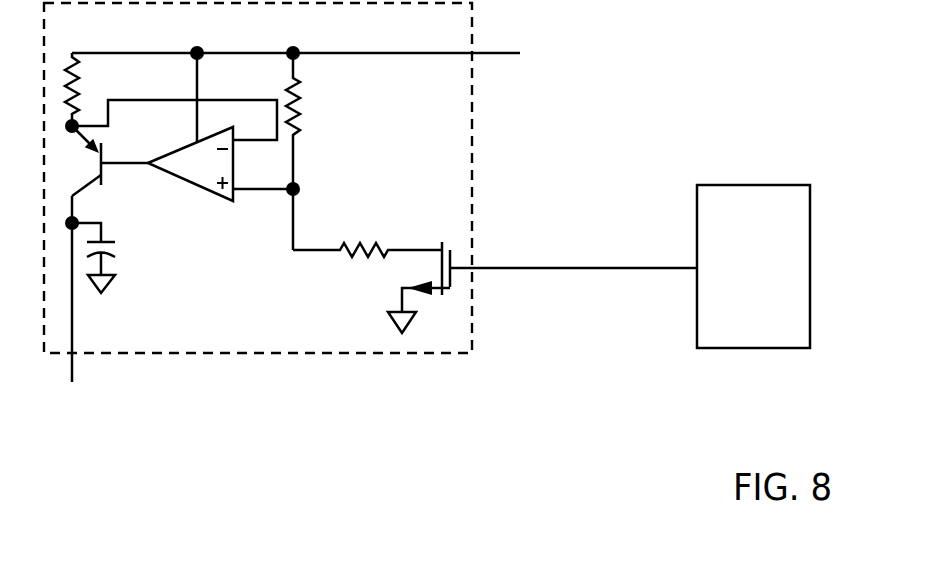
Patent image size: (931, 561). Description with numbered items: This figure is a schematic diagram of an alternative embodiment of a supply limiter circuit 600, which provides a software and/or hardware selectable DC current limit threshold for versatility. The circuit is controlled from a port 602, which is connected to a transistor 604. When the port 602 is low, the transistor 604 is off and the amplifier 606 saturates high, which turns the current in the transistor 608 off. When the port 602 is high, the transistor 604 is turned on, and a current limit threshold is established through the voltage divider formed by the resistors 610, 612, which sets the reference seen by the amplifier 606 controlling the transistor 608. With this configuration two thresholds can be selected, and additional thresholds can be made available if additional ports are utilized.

The supply limiter circuit 600 is at (540, 146).
The port 602 is at (525, 268).
The transistor 604 is at (452, 285).
The amplifier 606 is at (215, 197).
The transistor 608 is at (108, 176).
The voltage divider resistor 610 is at (298, 97).
The voltage divider resistor 612 is at (362, 243).